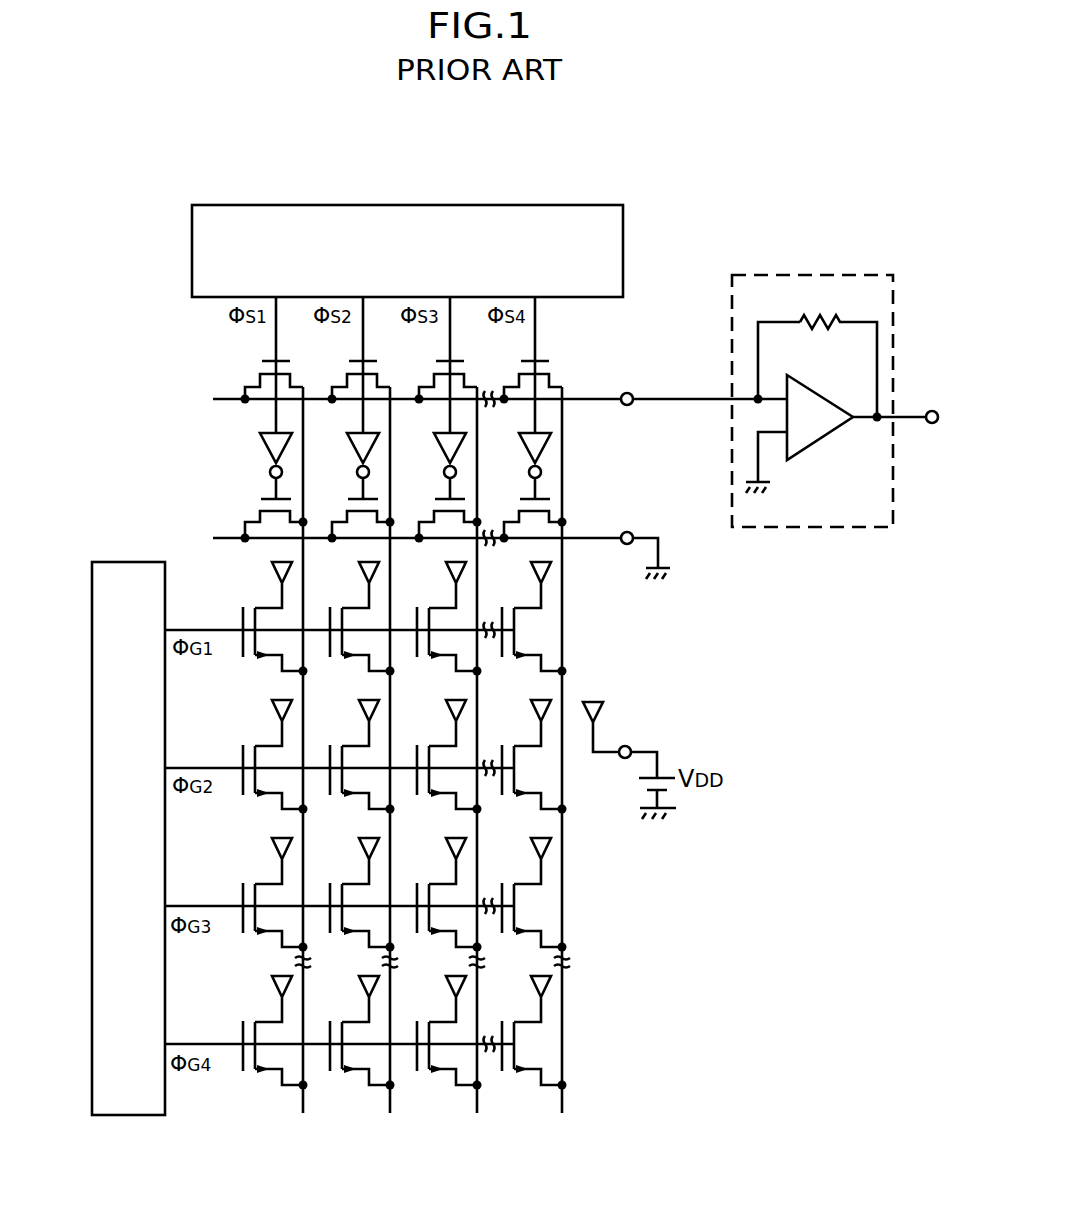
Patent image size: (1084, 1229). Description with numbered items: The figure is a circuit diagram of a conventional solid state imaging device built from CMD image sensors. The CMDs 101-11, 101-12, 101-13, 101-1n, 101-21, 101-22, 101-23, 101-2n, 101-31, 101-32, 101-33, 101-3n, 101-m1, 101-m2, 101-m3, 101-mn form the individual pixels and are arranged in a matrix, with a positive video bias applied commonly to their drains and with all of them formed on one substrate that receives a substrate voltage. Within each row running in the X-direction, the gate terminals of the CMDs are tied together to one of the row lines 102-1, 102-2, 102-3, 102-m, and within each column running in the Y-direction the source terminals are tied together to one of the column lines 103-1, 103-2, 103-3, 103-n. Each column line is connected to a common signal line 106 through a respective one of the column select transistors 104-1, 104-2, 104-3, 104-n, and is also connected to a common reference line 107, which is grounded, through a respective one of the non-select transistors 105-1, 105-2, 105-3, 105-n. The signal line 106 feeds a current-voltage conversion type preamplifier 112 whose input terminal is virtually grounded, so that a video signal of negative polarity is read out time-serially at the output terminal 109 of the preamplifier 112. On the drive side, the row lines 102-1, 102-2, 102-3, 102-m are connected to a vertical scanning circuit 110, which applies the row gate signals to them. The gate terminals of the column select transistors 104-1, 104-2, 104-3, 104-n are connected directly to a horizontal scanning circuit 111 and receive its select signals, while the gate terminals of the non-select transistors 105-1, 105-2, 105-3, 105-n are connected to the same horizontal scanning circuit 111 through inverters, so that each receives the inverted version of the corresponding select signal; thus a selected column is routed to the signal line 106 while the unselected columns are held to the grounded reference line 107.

The CMD 101-11 is at (267, 655).
The CMD 101-12 is at (354, 655).
The CMD 101-13 is at (441, 655).
The CMD 101-1n is at (526, 655).
The CMD 101-21 is at (267, 793).
The CMD 101-22 is at (354, 793).
The CMD 101-23 is at (441, 793).
The CMD 101-2n is at (527, 797).
The CMD 101-31 is at (267, 932).
The CMD 101-32 is at (352, 933).
The CMD 101-33 is at (440, 933).
The CMD 101-3n is at (525, 938).
The CMD 101-m1 is at (264, 1068).
The CMD 101-m2 is at (353, 1072).
The CMD 101-m3 is at (441, 1072).
The CMD 101-mn is at (525, 1072).
The row line 102-1 is at (218, 628).
The row line 102-2 is at (221, 766).
The row line 102-3 is at (222, 905).
The row line 102-m is at (213, 1043).
The column line 103-1 is at (300, 1118).
The column line 103-2 is at (391, 1116).
The column line 103-3 is at (477, 1115).
The column line 103-n is at (562, 1113).
The column select transistor 104-1 is at (257, 381).
The column select transistor 104-2 is at (343, 380).
The column select transistor 104-3 is at (430, 380).
The column select transistor 104-n is at (513, 382).
The non-select transistor 105-1 is at (245, 510).
The non-select transistor 105-2 is at (335, 508).
The non-select transistor 105-3 is at (473, 503).
The non-select transistor 105-n is at (553, 510).
The signal line 106 is at (665, 398).
The reference line 107 is at (598, 535).
The output terminal 109 is at (930, 410).
The vertical scanning circuit 110 is at (125, 561).
The horizontal scanning circuit 111 is at (598, 204).
The preamplifier 112 is at (852, 275).